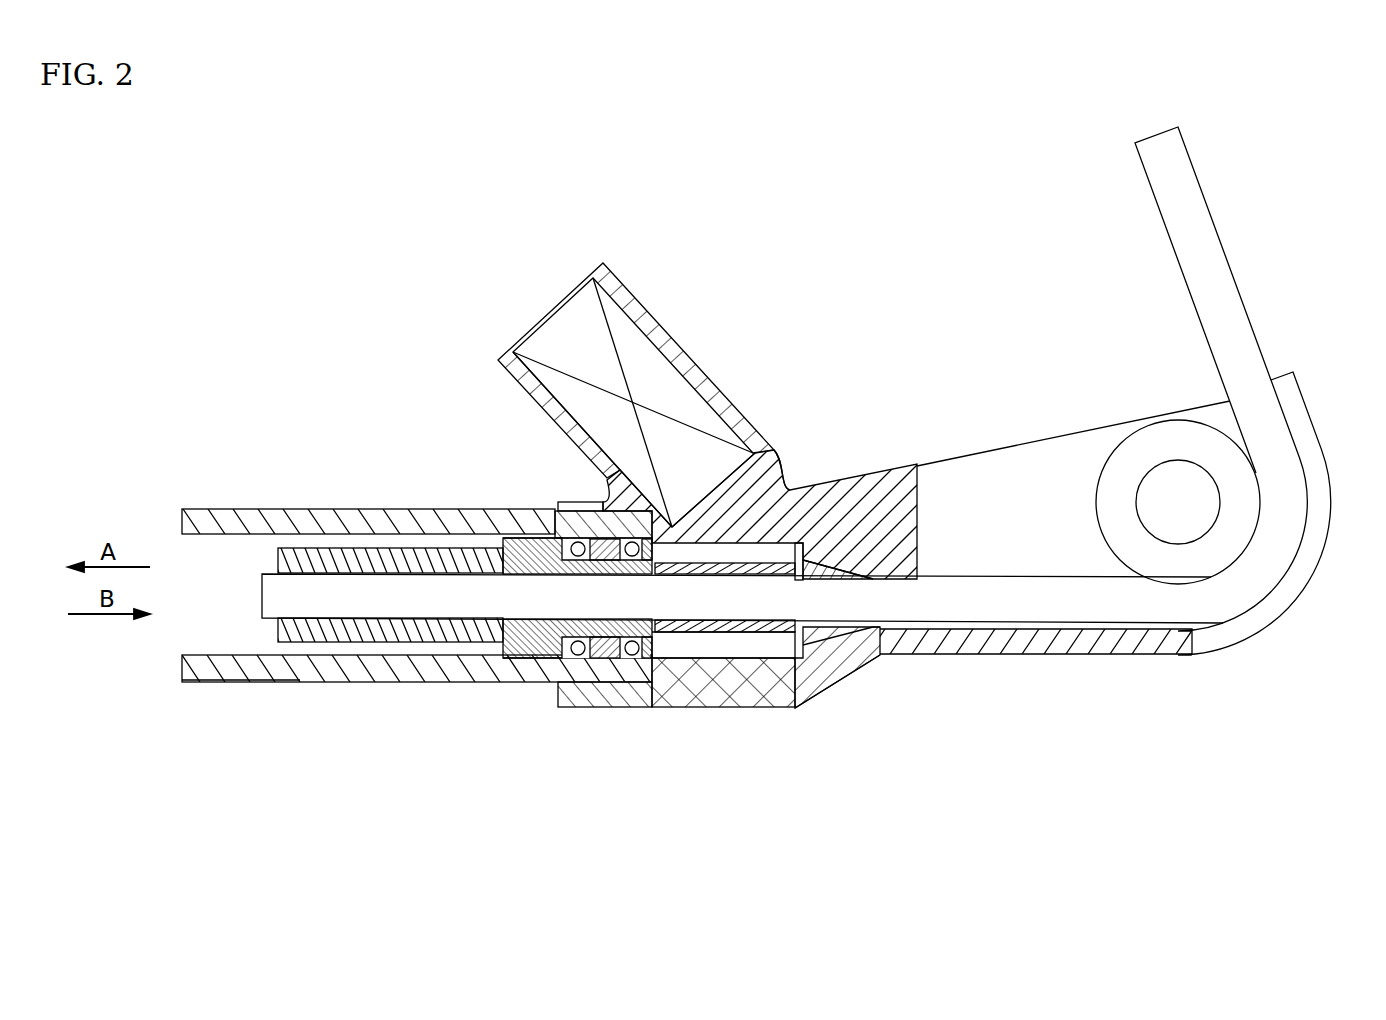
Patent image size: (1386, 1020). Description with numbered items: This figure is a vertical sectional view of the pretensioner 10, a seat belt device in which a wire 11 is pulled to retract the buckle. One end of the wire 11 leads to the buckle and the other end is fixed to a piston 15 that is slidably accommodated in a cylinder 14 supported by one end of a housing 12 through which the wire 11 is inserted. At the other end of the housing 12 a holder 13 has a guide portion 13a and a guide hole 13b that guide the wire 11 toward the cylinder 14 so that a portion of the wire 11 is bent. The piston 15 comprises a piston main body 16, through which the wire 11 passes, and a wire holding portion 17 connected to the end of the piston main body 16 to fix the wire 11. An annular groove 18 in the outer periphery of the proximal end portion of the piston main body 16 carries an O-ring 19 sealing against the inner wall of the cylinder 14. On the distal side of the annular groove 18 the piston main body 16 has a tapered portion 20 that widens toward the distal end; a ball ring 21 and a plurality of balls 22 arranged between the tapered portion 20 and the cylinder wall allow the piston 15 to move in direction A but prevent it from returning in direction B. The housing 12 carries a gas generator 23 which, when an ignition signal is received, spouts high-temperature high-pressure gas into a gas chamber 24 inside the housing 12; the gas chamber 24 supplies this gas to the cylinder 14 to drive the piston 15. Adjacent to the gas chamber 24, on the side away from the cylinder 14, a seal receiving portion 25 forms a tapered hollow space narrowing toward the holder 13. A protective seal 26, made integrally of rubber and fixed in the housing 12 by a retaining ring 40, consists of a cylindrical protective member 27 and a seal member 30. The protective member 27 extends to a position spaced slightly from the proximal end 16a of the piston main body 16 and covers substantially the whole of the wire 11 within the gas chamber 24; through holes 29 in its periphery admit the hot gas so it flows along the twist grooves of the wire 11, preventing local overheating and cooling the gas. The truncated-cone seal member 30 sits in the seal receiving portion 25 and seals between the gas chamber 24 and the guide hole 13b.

The pretensioner 10 is at (357, 298).
The wire 11 is at (331, 592).
The housing 12 is at (887, 498).
The holder 13 is at (1307, 430).
The guide portion 13a is at (1170, 443).
The guide hole 13b is at (1046, 630).
The cylinder 14 is at (236, 522).
The piston 15 is at (365, 640).
The piston main body 16 is at (510, 681).
The proximal end of the piston main body 16a is at (733, 650).
The wire holding portion 17 is at (283, 681).
The annular groove 18 is at (657, 645).
The O-ring 19 is at (629, 657).
The tapered portion 20 is at (548, 514).
The ball ring 21 is at (600, 666).
The balls 22 is at (560, 503).
The gas generator 23 is at (557, 337).
The gas chamber 24 is at (753, 636).
The seal receiving portion 25 is at (880, 653).
The protective seal 26 is at (853, 663).
The protective member 27 is at (807, 693).
The through holes 29 is at (747, 563).
The seal member 30 is at (845, 560).
The retaining ring 40 is at (807, 527).